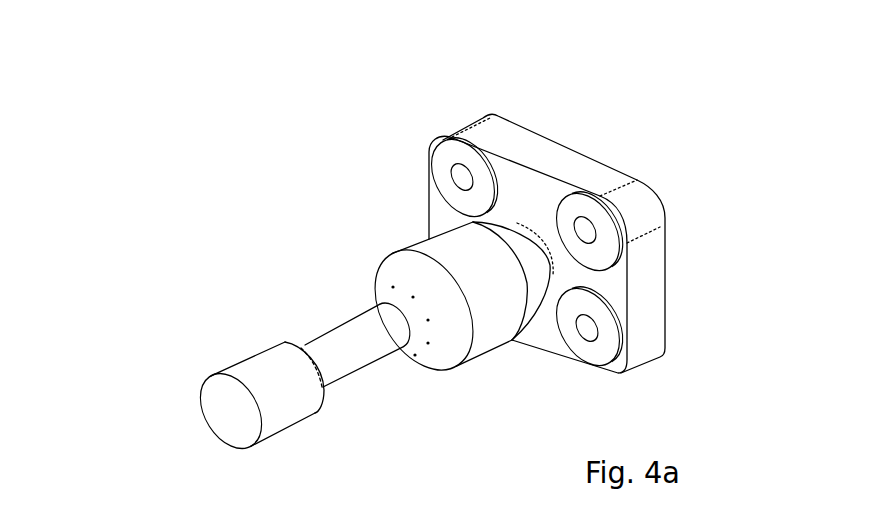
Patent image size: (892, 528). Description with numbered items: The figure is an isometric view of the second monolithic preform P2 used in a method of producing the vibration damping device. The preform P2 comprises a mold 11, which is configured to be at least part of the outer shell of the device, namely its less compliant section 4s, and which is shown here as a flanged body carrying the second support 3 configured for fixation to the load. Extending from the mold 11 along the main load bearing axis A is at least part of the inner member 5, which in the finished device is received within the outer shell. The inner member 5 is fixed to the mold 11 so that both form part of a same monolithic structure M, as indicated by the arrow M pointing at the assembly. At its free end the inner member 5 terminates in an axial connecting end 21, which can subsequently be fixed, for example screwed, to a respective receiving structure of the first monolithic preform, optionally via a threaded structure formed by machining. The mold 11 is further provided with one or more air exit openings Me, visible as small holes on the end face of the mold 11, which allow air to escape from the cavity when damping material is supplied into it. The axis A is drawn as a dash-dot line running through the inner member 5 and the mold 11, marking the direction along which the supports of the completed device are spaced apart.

The second support 3 is at (557, 157).
The mold 11 is at (374, 190).
The less compliant section 4s is at (490, 332).
The air exit openings Me is at (392, 278).
The inner member 5 is at (353, 352).
The axial connecting end 21 is at (273, 380).
The second monolithic preform P2 is at (186, 113).
The monolithic structure M is at (732, 390).
The main load bearing axis A is at (226, 414).